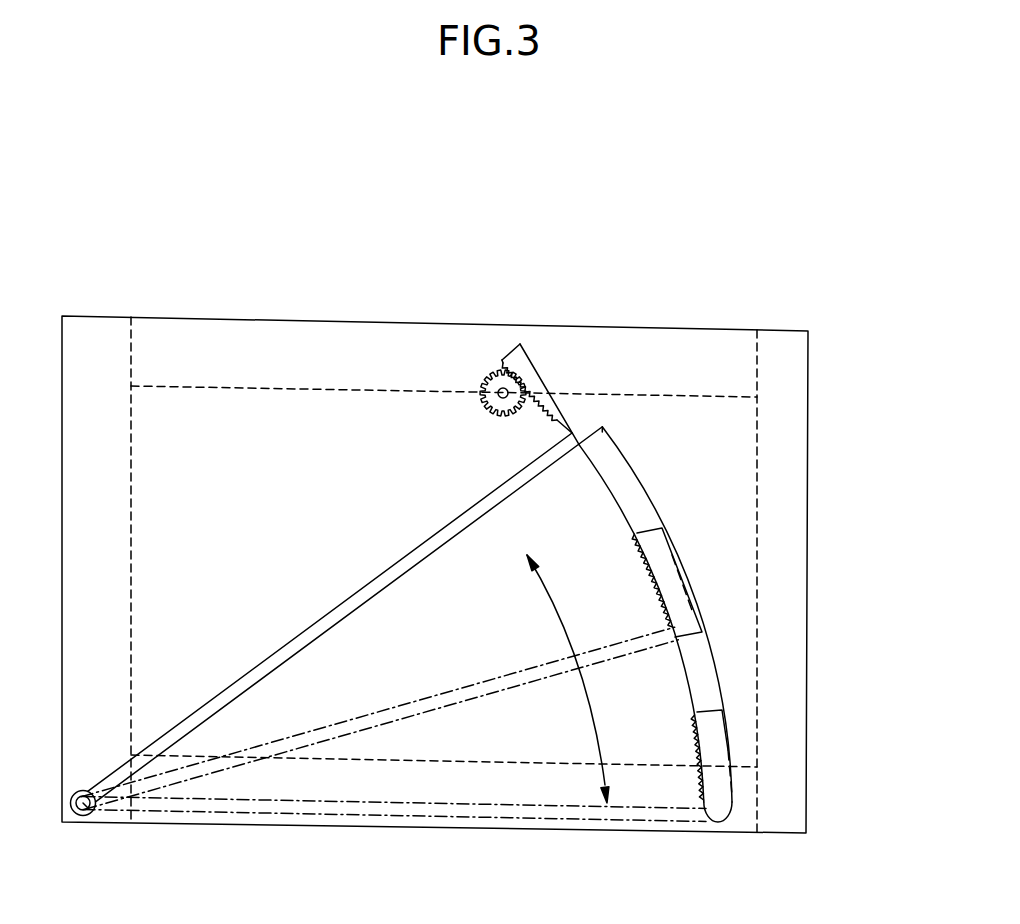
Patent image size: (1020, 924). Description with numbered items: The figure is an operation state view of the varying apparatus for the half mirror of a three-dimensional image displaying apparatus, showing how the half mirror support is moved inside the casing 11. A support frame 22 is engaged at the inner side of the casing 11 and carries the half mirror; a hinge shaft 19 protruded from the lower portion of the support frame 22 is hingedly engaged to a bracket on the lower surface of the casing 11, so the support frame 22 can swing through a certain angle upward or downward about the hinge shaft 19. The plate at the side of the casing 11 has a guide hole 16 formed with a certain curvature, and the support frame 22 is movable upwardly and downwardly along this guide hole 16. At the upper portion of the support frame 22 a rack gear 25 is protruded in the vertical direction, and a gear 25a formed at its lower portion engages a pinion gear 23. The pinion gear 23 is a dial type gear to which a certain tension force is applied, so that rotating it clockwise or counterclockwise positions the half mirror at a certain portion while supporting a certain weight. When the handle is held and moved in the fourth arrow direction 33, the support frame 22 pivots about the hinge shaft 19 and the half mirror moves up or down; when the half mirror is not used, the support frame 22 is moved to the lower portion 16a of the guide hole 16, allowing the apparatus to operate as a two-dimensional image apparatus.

The casing 11 is at (110, 338).
The guide hole 16 is at (720, 680).
The lower portion 16a is at (730, 813).
The hinge shaft 19 is at (93, 817).
The support frame 22 is at (483, 495).
The pinion gear 23 is at (488, 372).
The rack gear 25 is at (568, 410).
The gear 25a is at (520, 345).
The fourth arrow direction 33 is at (605, 770).